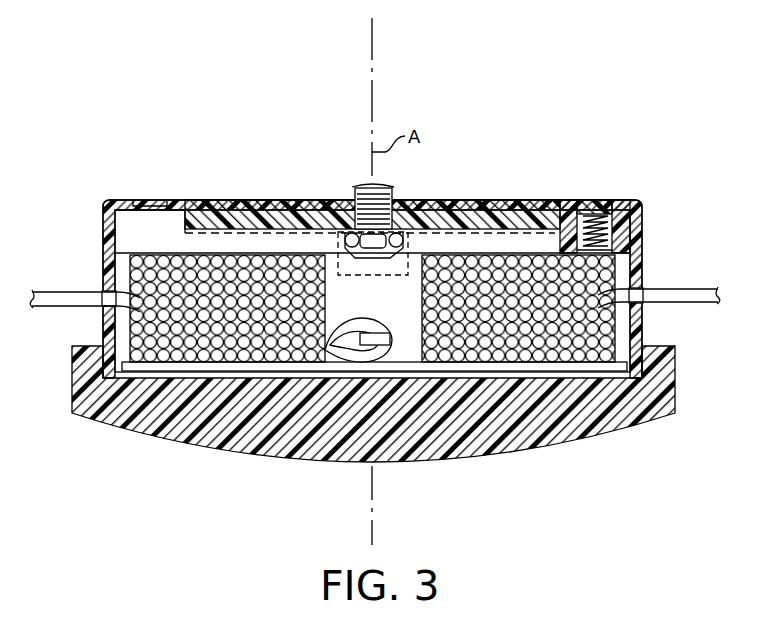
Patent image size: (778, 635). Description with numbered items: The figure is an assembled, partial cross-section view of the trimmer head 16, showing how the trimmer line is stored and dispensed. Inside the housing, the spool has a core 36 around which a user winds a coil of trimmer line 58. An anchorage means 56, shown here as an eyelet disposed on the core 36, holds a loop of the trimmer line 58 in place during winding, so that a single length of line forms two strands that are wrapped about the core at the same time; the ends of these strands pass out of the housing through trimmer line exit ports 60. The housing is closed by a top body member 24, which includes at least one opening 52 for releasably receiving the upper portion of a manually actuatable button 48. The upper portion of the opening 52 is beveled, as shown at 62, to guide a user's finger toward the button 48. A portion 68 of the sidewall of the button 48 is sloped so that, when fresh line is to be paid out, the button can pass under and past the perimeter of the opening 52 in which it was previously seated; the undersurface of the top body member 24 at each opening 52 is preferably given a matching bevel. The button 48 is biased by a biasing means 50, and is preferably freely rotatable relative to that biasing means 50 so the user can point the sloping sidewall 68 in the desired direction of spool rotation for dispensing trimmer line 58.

The weight assembly 16 is at (99, 194).
The top body member 24 is at (105, 226).
The core 36 is at (388, 305).
The manually actuatable button 48 is at (598, 199).
The biasing means 50 is at (610, 228).
The opening 52 is at (152, 205).
The anchorage means 56 is at (385, 349).
The trimmer line 58 is at (75, 307).
The trimmer line exit ports 60 is at (105, 291).
The bevel 62 is at (137, 199).
The sloped portion of button sidewall 68 is at (581, 204).